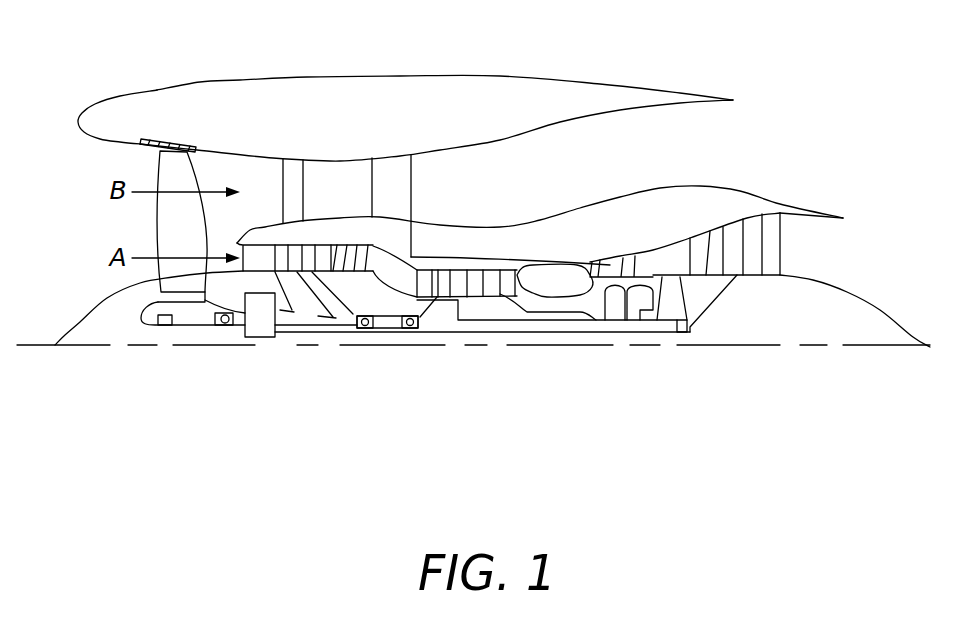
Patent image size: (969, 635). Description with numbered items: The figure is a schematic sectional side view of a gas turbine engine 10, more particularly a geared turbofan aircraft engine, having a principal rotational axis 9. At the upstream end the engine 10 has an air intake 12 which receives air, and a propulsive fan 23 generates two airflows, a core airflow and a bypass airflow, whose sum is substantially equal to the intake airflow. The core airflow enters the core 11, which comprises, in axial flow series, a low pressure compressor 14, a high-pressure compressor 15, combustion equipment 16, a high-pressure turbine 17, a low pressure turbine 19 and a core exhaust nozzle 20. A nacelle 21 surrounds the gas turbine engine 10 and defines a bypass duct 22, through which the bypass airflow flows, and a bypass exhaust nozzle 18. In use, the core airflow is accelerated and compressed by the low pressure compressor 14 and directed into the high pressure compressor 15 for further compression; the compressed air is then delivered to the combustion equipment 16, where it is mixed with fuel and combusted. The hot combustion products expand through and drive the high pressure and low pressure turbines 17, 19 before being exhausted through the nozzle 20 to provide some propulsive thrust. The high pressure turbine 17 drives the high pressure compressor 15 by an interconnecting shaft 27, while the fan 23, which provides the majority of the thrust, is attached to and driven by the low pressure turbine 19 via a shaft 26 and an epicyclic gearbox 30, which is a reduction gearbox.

The principal rotational axis 9 is at (728, 348).
The gas turbine engine 10 is at (148, 85).
The core 11 is at (524, 234).
The air intake 12 is at (100, 168).
The low pressure compressor 14 is at (332, 248).
The high-pressure compressor 15 is at (473, 283).
The combustion equipment 16 is at (557, 283).
The high-pressure turbine 17 is at (606, 262).
The bypass exhaust nozzle 18 is at (745, 143).
The low pressure turbine 19 is at (750, 237).
The core exhaust nozzle 20 is at (833, 246).
The nacelle 21 is at (388, 88).
The bypass duct 22 is at (654, 156).
The propulsive fan 23 is at (161, 225).
The shaft 26 is at (468, 335).
The interconnecting shaft 27 is at (507, 333).
The epicyclic gearbox 30 is at (257, 326).